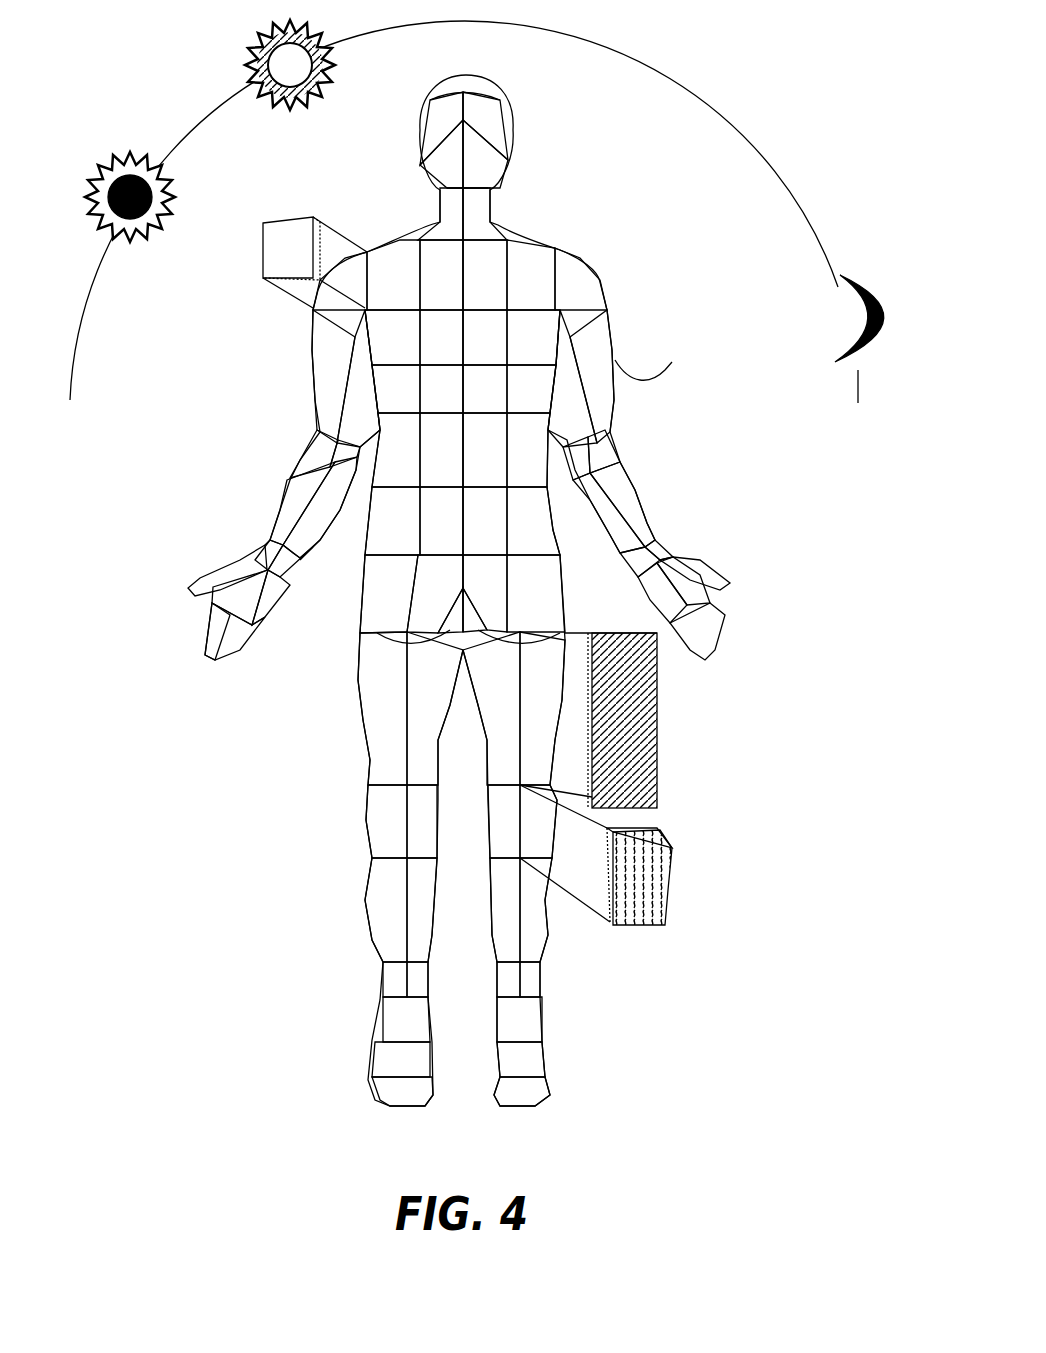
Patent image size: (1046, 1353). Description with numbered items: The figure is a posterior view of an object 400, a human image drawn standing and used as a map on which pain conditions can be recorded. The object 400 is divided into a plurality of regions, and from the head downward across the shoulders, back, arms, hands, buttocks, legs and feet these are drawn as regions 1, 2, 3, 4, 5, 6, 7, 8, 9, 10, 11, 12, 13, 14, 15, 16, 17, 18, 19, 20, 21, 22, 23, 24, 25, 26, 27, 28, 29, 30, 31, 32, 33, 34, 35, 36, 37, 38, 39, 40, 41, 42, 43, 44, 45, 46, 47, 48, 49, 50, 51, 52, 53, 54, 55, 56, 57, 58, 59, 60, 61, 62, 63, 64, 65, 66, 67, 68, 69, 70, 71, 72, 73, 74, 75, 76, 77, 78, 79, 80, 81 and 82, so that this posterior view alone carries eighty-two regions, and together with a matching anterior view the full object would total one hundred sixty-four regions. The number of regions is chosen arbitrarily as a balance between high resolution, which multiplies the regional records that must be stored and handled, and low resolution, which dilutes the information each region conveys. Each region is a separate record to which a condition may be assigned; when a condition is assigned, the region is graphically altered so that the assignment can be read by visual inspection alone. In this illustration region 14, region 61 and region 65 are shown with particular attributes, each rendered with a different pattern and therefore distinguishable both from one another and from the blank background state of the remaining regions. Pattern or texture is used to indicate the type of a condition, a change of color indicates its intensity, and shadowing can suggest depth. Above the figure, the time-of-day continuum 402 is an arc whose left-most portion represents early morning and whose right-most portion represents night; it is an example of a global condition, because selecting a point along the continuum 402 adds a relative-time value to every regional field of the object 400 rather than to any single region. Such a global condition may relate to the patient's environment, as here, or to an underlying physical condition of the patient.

The region 1 is at (485, 126).
The region 2 is at (441, 128).
The region 3 is at (485, 154).
The region 4 is at (441, 154).
The region 5 is at (485, 214).
The region 6 is at (440, 214).
The region 7 is at (592, 376).
The region 8 is at (572, 378).
The region 9 is at (581, 279).
The region 10 is at (531, 275).
The region 11 is at (485, 275).
The region 12 is at (441, 275).
The region 13 is at (393, 275).
The region 14 is at (315, 263).
The region 15 is at (358, 378).
The region 16 is at (333, 376).
The region 17 is at (603, 451).
The region 18 is at (577, 458).
The region 19 is at (533, 337).
The region 20 is at (485, 337).
The region 21 is at (441, 337).
The region 22 is at (392, 337).
The region 23 is at (344, 457).
The region 24 is at (314, 454).
The region 25 is at (531, 389).
The region 26 is at (485, 389).
The region 27 is at (441, 389).
The region 28 is at (395, 389).
The region 29 is at (622, 504).
The region 30 is at (609, 513).
The region 31 is at (527, 450).
The region 32 is at (485, 450).
The region 33 is at (441, 450).
The region 34 is at (396, 450).
The region 35 is at (320, 507).
The region 36 is at (302, 503).
The region 37 is at (657, 552).
The region 38 is at (639, 562).
The region 39 is at (290, 561).
The region 40 is at (262, 552).
The region 41 is at (695, 569).
The region 42 is at (683, 581).
The region 43 is at (662, 593).
The region 44 is at (533, 521).
The region 45 is at (485, 521).
The region 46 is at (441, 521).
The region 47 is at (392, 521).
The region 48 is at (268, 597).
The region 49 is at (240, 597).
The region 50 is at (227, 570).
The region 51 is at (709, 631).
The region 52 is at (603, 718).
The region 53 is at (239, 633).
The region 54 is at (202, 631).
The region 55 is at (536, 593).
The region 56 is at (485, 593).
The region 57 is at (477, 611).
The region 58 is at (449, 611).
The region 59 is at (435, 594).
The region 60 is at (389, 594).
The region 61 is at (542, 708).
The region 62 is at (491, 708).
The region 63 is at (435, 708).
The region 64 is at (382, 708).
The region 65 is at (596, 855).
The region 66 is at (502, 821).
The region 67 is at (422, 821).
The region 68 is at (386, 821).
The region 69 is at (535, 910).
The region 70 is at (502, 910).
The region 71 is at (422, 910).
The region 72 is at (386, 910).
The region 73 is at (532, 979).
The region 74 is at (505, 979).
The region 75 is at (420, 979).
The region 76 is at (393, 979).
The region 77 is at (519, 1021).
The region 78 is at (406, 1021).
The region 79 is at (521, 1059).
The region 80 is at (401, 1059).
The region 81 is at (522, 1092).
The region 82 is at (402, 1092).
The object 400 is at (669, 361).
The time-of-day continuum 402 is at (675, 92).